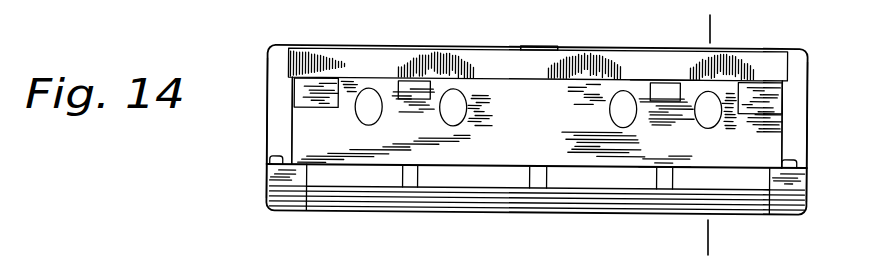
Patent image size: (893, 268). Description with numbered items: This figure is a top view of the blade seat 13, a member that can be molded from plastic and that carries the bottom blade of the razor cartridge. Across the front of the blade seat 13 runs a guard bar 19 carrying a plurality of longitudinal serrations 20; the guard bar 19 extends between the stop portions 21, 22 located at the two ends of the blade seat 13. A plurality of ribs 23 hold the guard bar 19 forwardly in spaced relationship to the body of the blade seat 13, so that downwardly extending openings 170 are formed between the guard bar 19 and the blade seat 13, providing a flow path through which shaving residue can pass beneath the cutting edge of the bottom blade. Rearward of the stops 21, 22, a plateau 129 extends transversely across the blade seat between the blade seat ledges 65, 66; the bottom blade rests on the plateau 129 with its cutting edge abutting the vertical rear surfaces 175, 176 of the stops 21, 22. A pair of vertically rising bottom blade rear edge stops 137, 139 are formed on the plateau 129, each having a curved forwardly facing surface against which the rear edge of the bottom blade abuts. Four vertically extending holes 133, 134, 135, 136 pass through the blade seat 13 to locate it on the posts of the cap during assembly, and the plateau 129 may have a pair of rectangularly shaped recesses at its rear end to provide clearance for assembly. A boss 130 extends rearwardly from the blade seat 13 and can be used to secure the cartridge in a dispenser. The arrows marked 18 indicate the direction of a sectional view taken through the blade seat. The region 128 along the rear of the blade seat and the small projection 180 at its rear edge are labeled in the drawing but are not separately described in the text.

The blade seat 13 is at (820, 83).
The section line 18 is at (728, 23).
The guard bar 19 is at (633, 205).
The longitudinal serrations 20 is at (463, 198).
The stop portion 21 is at (268, 188).
The stop portion 22 is at (790, 192).
The ribs 23 is at (402, 173).
The blade seat ledge 65 is at (287, 142).
The blade seat ledge 66 is at (798, 128).
The top flange 128 is at (653, 63).
The plateau 129 is at (553, 126).
The boss 130 is at (545, 43).
The vertically extending hole 133 is at (366, 93).
The vertically extending hole 134 is at (452, 93).
The vertically extending hole 135 is at (621, 95).
The vertically extending hole 136 is at (707, 96).
The bottom blade rear edge stop 137 is at (322, 84).
The bottom blade rear edge stop 139 is at (767, 87).
The downwardly extending openings 170 is at (527, 175).
The vertical rear surface 175 is at (272, 161).
The vertical rear surface 176 is at (797, 166).
The tab 180 is at (493, 72).